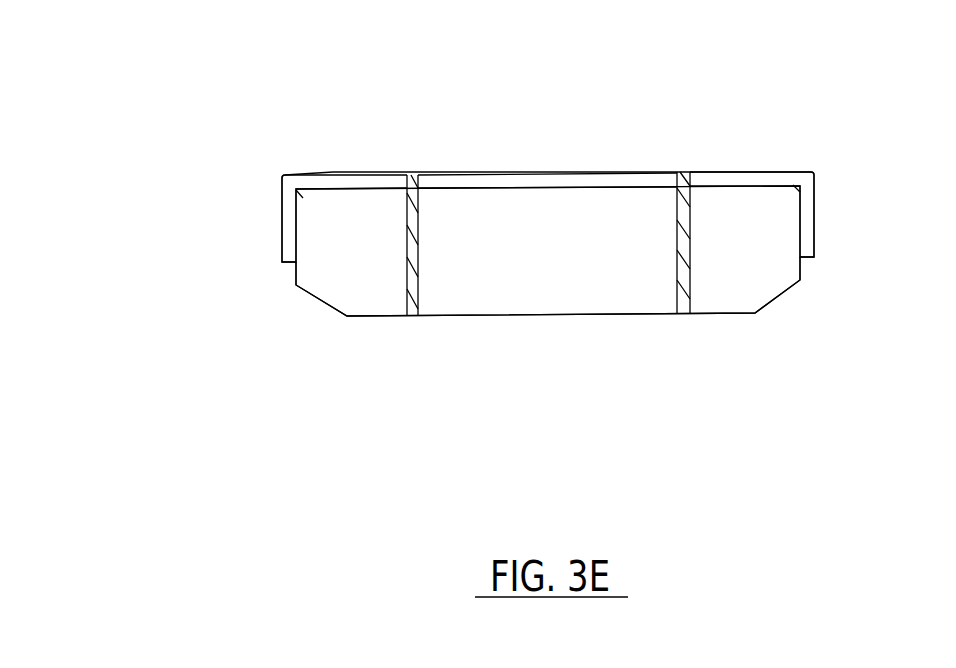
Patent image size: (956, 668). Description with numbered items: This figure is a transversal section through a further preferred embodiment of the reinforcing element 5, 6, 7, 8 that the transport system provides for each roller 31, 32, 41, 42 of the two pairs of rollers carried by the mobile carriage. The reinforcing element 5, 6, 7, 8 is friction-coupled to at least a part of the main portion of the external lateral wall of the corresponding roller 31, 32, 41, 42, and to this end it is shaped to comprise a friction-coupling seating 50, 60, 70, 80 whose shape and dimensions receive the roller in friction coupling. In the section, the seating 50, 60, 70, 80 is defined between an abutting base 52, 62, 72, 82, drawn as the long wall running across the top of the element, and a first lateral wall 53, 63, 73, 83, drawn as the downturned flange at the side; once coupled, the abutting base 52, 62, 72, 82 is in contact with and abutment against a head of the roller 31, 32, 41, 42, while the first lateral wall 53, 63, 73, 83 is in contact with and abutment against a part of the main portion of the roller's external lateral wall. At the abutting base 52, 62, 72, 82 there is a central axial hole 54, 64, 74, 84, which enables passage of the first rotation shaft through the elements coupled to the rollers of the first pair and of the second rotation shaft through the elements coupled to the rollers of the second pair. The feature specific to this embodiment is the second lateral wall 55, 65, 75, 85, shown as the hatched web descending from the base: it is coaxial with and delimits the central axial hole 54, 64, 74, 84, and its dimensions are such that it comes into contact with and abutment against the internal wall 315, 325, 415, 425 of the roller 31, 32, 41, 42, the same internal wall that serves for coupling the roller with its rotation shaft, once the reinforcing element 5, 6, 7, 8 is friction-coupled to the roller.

The reinforcing element 5 is at (478, 175).
The reinforcing element 6 is at (478, 175).
The reinforcing element 7 is at (478, 175).
The reinforcing element 8 is at (333, 172).
The central axial hole 54 is at (537, 118).
The central axial hole 64 is at (537, 118).
The central axial hole 74 is at (537, 118).
The central axial hole 84 is at (548, 180).
The abutting base 52 is at (795, 133).
The abutting base 62 is at (795, 133).
The abutting base 72 is at (795, 133).
The abutting base 82 is at (745, 173).
The first lateral wall 53 is at (208, 218).
The first lateral wall 63 is at (208, 218).
The first lateral wall 73 is at (208, 218).
The first lateral wall 83 is at (282, 226).
The friction-coupling seating 50 is at (450, 350).
The friction-coupling seating 60 is at (450, 350).
The friction-coupling seating 70 is at (450, 350).
The friction-coupling seating 80 is at (298, 235).
The second lateral wall 55 is at (530, 306).
The second lateral wall 65 is at (530, 306).
The second lateral wall 75 is at (530, 306).
The second lateral wall 85 is at (415, 255).
The internal wall 315 is at (254, 439).
The internal wall 325 is at (254, 439).
The internal wall 415 is at (254, 439).
The internal wall 425 is at (406, 256).
The first roller 31 is at (802, 322).
The second roller 32 is at (802, 322).
The first roller 41 is at (802, 322).
The second roller 42 is at (717, 300).